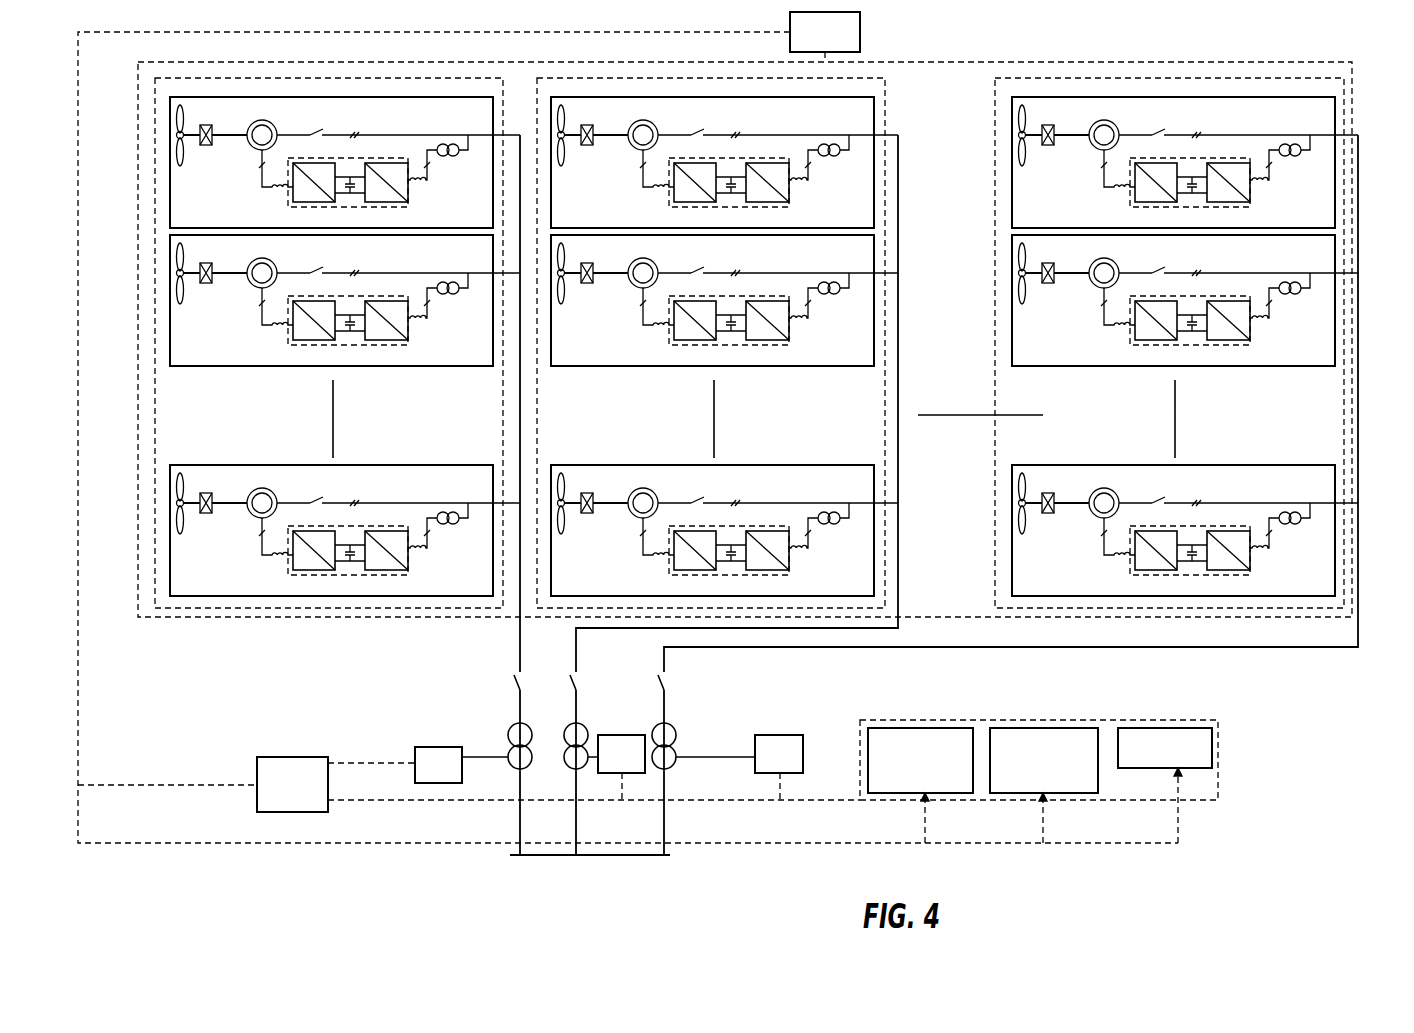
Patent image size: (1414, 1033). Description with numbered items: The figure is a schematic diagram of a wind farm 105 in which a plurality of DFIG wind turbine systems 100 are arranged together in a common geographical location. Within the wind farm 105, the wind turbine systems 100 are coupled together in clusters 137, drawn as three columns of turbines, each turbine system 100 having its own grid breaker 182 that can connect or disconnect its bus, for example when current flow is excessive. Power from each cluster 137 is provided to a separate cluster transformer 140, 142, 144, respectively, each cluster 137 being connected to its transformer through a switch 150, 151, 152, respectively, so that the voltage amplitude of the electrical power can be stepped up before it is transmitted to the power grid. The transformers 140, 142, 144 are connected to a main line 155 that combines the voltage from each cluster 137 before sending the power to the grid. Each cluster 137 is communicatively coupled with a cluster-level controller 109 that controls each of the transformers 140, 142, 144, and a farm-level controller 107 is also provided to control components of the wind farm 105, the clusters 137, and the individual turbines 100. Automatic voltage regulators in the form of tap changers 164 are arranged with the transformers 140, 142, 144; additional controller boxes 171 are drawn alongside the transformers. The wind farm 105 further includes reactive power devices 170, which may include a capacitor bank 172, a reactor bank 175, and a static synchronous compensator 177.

The DFIG wind turbine system 100 is at (170, 150).
The wind farm 105 is at (1376, 125).
The farm-level controller 107 is at (825, 37).
The cluster-level controller 109 is at (628, 437).
The cluster 137 is at (155, 252).
The cluster transformer 140 is at (508, 736).
The cluster transformer 142 is at (580, 727).
The cluster transformer 144 is at (677, 729).
The switch 150 is at (505, 677).
The switch 151 is at (560, 678).
The switch 152 is at (672, 686).
The main line 155 is at (527, 857).
The tap changer 164 is at (742, 877).
The reactive power device 170 is at (1182, 716).
The transformer controller 171 is at (695, 767).
The capacitor bank 172 is at (912, 727).
The reactor bank 175 is at (1033, 727).
The static synchronous compensator (STATCOM) 177 is at (1148, 727).
The grid breaker 182 is at (865, 300).